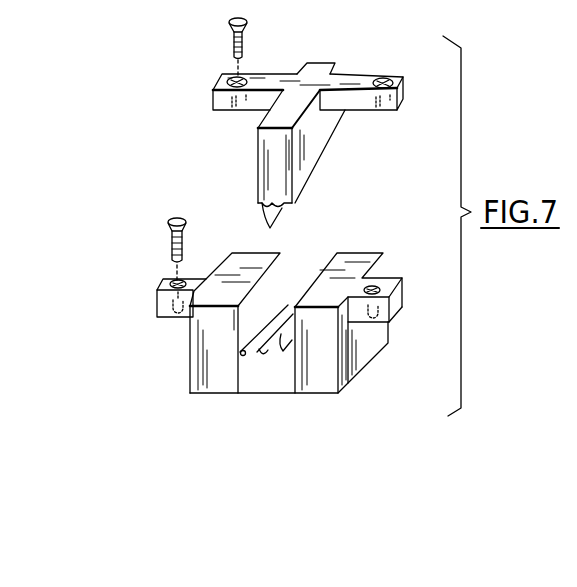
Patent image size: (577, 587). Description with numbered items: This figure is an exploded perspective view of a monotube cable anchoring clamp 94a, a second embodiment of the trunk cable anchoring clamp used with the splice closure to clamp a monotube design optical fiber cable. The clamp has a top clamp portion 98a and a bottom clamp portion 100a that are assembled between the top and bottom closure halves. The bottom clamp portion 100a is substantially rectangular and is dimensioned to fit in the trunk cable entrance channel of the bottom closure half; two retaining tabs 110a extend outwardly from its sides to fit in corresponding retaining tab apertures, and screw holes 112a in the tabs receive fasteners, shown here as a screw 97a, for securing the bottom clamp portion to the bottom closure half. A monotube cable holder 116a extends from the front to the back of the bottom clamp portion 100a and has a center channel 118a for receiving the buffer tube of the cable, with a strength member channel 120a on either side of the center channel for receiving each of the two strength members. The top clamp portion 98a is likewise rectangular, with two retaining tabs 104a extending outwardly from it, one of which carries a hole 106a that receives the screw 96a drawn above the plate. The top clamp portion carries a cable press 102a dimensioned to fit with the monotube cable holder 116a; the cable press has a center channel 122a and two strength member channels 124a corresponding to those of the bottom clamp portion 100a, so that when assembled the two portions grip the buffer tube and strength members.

The monotube cable anchoring clamp 94a is at (283, 129).
The screw 96a is at (229, 22).
The screw 97a is at (168, 221).
The top clamp portion 98a is at (332, 43).
The bottom clamp portion 100a is at (267, 327).
The cable press 102a is at (265, 168).
The retaining tabs 104a is at (357, 72).
The screw hole 106a is at (405, 85).
The retaining tabs 110a is at (157, 299).
The screw holes 112a is at (178, 318).
The monotube cable holder 116a is at (317, 252).
The center channel 118a is at (259, 357).
The strength member channel 120a is at (243, 357).
The center channel 122a is at (284, 207).
The strength member channels 124a is at (270, 228).